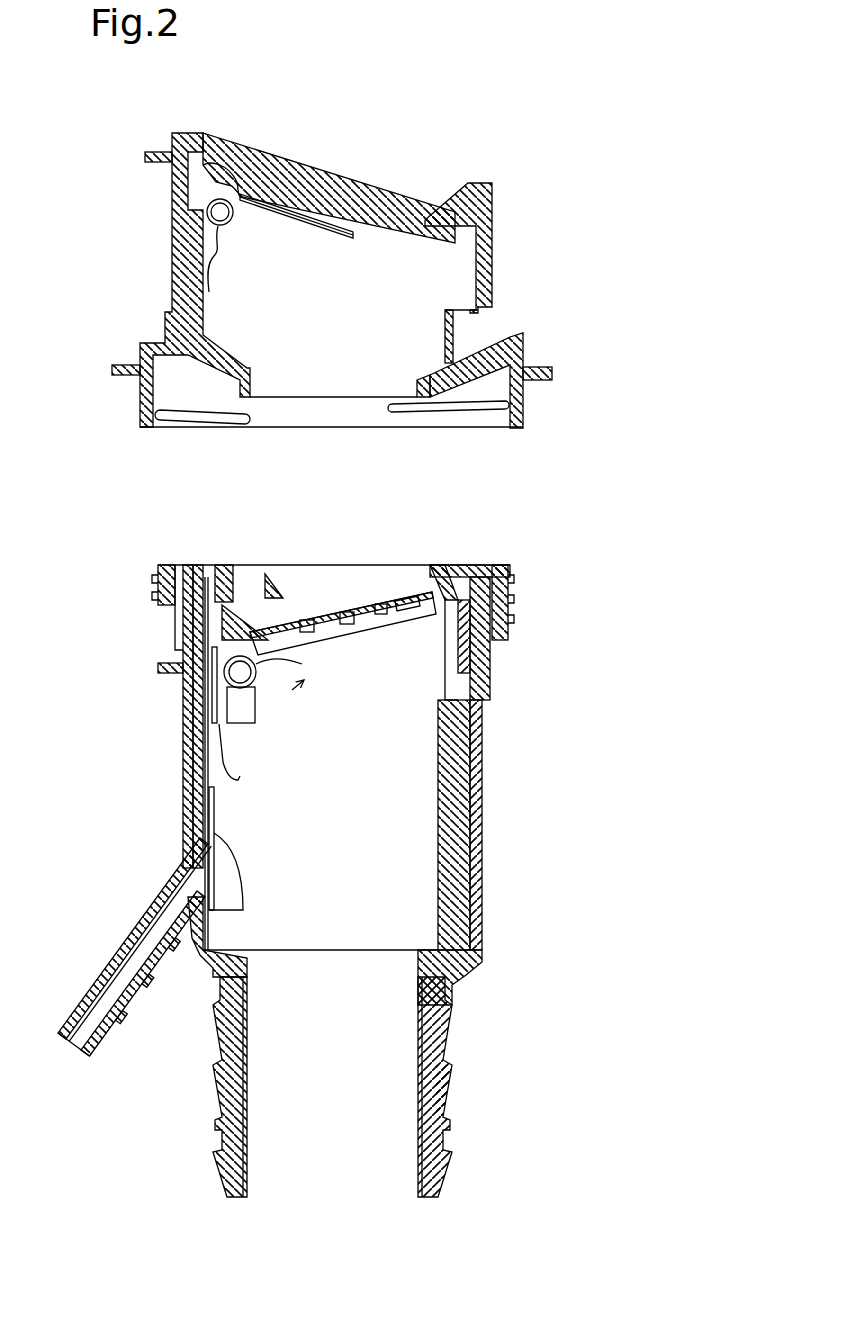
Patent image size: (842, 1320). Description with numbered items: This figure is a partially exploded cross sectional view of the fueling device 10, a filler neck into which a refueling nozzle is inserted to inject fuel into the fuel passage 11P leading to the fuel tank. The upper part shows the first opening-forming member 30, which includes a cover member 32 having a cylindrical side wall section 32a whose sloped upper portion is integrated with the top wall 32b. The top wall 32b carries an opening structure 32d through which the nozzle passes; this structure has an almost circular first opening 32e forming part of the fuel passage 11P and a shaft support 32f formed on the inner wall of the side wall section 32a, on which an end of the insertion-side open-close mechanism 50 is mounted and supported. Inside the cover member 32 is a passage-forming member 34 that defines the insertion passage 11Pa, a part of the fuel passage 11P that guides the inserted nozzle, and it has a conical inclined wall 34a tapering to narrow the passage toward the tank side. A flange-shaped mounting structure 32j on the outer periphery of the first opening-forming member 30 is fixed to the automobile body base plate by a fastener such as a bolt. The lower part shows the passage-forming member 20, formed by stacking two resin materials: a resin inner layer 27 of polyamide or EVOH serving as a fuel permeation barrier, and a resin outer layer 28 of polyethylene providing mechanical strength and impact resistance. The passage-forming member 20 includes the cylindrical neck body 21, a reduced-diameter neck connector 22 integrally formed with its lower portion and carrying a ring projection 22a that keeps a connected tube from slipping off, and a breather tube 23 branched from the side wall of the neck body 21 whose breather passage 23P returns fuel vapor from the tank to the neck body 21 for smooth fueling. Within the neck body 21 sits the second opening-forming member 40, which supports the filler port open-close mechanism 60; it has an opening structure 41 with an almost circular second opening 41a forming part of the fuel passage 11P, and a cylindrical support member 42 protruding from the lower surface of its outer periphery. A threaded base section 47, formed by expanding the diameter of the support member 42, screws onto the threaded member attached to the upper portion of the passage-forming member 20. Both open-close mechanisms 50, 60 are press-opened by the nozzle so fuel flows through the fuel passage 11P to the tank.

The fueling device 10 is at (550, 116).
The first opening-forming member 30 is at (690, 212).
The cover member 32 is at (633, 162).
The side wall section 32a is at (492, 265).
The top wall 32b is at (492, 185).
The opening structure 32d is at (443, 205).
The first opening 32e is at (413, 223).
The shaft support 32f is at (215, 256).
The mounting structure 32j is at (538, 380).
The passage-forming member 34 is at (471, 358).
The inclined wall 34a is at (420, 375).
The insertion-side open-close mechanism 50 is at (246, 172).
The passage-forming member 20 is at (575, 868).
The neck body 21 is at (483, 872).
The neck connector 22 is at (447, 1040).
The ring projection 22a is at (454, 1066).
The breather tube 23 is at (133, 912).
The breather passage 23P is at (100, 978).
The resin inner layer 27 is at (190, 708).
The resin outer layer 28 is at (185, 775).
The second opening-forming member 40 is at (572, 595).
The opening structure 41 is at (430, 605).
The second opening 41a is at (410, 606).
The support member 42 is at (482, 672).
The threaded base section 47 is at (508, 602).
The filler port open-close mechanism 60 is at (255, 677).
The insertion passage 11Pa is at (366, 754).
The fuel passage 11P is at (372, 788).